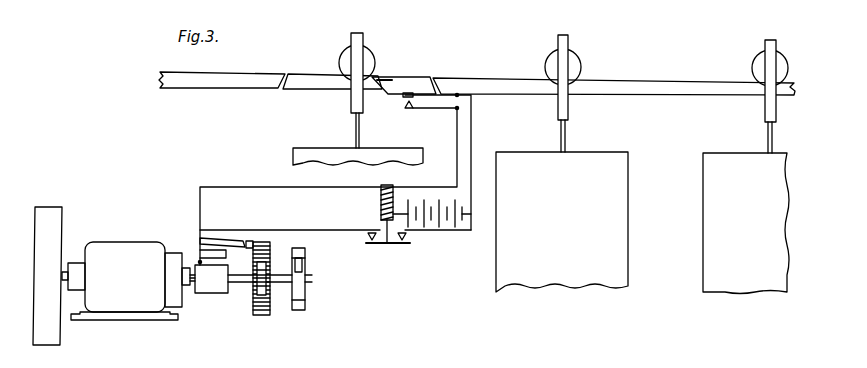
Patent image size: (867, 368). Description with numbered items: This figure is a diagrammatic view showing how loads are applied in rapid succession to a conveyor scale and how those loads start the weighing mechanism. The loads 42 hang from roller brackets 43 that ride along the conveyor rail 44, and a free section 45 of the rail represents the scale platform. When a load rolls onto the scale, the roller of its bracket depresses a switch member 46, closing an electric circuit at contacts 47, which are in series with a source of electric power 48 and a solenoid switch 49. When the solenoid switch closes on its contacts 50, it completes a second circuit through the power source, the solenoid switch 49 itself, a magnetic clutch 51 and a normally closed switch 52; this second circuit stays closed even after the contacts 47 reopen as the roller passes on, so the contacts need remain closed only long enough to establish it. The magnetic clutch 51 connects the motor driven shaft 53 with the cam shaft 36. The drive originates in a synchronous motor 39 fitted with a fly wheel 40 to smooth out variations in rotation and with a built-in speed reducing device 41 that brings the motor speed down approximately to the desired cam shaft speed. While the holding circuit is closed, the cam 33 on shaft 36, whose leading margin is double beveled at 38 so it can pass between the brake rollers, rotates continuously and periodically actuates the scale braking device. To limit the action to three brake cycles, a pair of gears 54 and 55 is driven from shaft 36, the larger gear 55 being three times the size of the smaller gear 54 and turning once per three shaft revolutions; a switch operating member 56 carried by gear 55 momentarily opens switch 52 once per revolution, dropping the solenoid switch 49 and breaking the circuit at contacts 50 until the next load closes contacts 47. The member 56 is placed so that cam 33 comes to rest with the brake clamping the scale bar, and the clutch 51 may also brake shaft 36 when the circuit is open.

The cam 33 is at (310, 305).
The shaft 36 is at (291, 285).
The double beveled portion 38 is at (306, 259).
The synchronous motor 39 is at (130, 310).
The fly wheel 40 is at (50, 232).
The speed reducing device 41 is at (185, 300).
The loads 42 is at (308, 150).
The roller brackets 43 is at (581, 68).
The conveyor rail 44 is at (655, 80).
The free section of the rail 45 is at (421, 80).
The switch member 46 is at (388, 77).
The contacts 47 is at (406, 108).
The source of electric power 48 is at (432, 230).
The solenoid switch 49 is at (396, 190).
The contacts 50 is at (371, 244).
The magnetic clutch 51 is at (215, 283).
The normally closed switch 52 is at (240, 243).
The motor driven shaft 53 is at (196, 290).
The gear 54 is at (257, 300).
The gear 55 is at (268, 245).
The switch operating member 56 is at (256, 242).